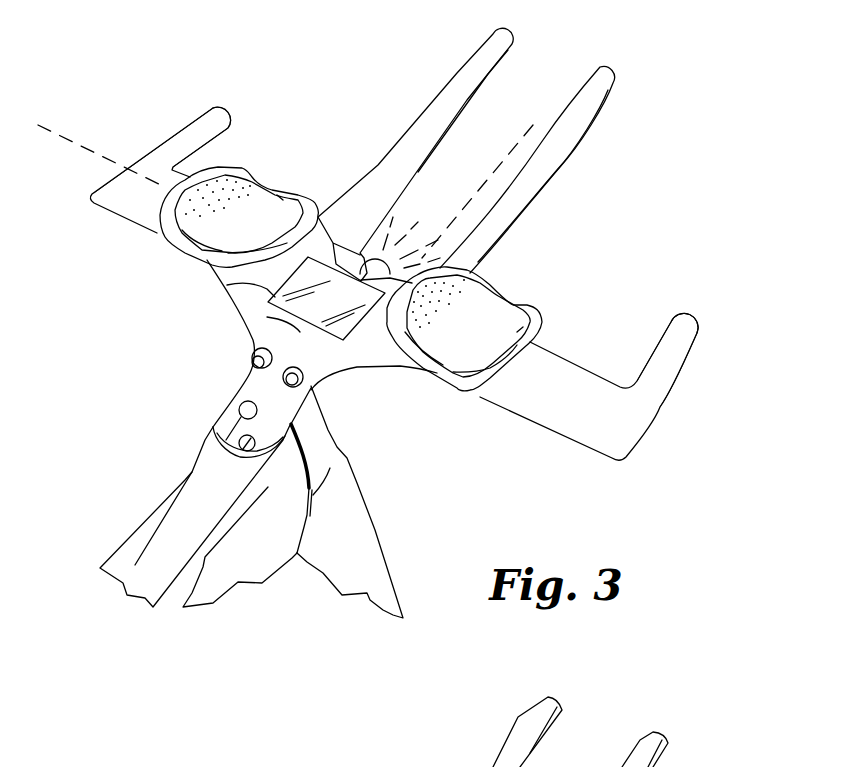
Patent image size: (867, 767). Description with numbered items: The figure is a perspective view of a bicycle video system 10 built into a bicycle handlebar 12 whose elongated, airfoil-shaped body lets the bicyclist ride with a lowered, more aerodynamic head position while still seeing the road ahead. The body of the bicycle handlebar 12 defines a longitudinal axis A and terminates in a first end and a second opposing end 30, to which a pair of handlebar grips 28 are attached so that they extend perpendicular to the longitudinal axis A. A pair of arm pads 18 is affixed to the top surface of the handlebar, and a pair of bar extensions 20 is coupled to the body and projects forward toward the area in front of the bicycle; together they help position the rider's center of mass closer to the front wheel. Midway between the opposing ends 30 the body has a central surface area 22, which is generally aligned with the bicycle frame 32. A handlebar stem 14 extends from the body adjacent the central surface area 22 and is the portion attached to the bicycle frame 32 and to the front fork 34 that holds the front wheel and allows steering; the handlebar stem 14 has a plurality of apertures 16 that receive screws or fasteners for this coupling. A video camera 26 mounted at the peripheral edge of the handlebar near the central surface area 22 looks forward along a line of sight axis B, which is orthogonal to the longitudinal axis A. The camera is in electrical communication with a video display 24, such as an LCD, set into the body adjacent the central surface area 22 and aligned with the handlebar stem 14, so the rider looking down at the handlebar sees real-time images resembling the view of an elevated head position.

The bicycle video system 10 is at (306, 104).
The bicycle handlebar 12 is at (543, 420).
The handlebar stem 14 is at (248, 387).
The apertures 16 is at (240, 403).
The arm pads 18 is at (262, 203).
The bar extensions 20 is at (452, 92).
The central surface area 22 is at (267, 317).
The video display 24 is at (227, 285).
The video camera 26 is at (363, 257).
The handlebar grips 28 is at (688, 326).
The opposing ends 30 is at (100, 197).
The bicycle frame 32 is at (195, 480).
The front fork 34 is at (320, 439).
The longitudinal axis A is at (62, 134).
The line of sight axis B is at (508, 153).